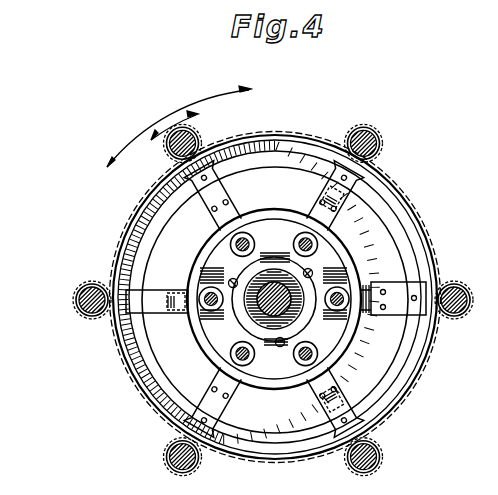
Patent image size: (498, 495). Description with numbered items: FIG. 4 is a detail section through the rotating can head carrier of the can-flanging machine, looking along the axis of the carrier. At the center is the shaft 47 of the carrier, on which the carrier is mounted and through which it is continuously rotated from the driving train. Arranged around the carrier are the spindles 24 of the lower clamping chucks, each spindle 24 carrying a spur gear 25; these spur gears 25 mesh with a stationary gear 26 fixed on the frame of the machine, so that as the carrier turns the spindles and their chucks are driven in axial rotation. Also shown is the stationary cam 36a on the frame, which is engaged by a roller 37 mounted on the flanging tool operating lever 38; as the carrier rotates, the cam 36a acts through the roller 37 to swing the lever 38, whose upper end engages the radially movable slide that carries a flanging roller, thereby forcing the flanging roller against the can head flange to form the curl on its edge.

The spindle 24 is at (170, 153).
The spur gear 25 is at (383, 141).
The stationary gear 26 is at (372, 432).
The stationary cam 36a is at (240, 272).
The roller 37 is at (308, 238).
The flanging tool operating lever 38 is at (308, 240).
The shaft 47 is at (260, 306).